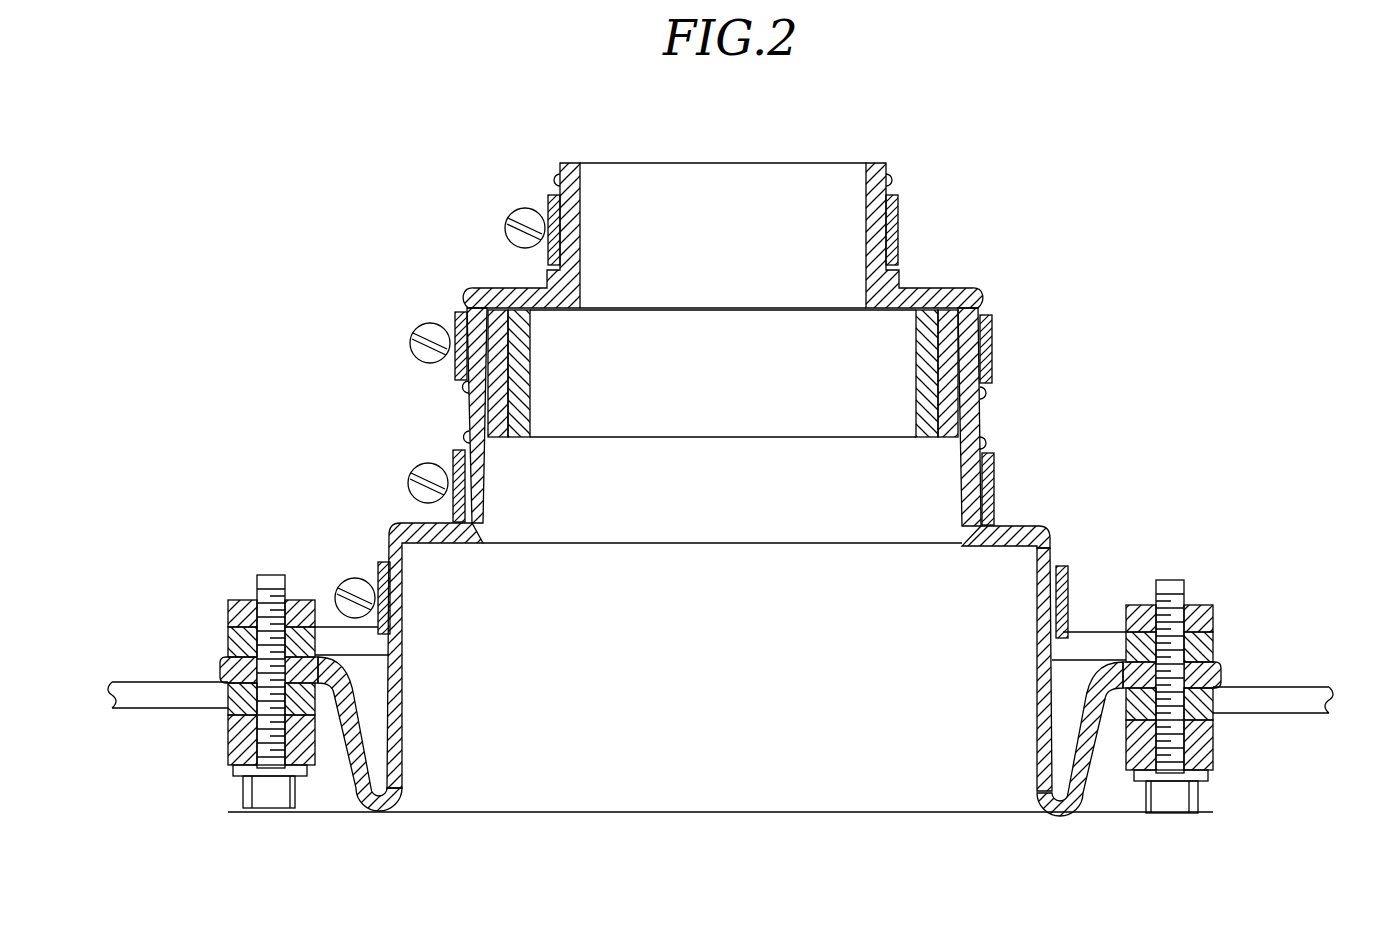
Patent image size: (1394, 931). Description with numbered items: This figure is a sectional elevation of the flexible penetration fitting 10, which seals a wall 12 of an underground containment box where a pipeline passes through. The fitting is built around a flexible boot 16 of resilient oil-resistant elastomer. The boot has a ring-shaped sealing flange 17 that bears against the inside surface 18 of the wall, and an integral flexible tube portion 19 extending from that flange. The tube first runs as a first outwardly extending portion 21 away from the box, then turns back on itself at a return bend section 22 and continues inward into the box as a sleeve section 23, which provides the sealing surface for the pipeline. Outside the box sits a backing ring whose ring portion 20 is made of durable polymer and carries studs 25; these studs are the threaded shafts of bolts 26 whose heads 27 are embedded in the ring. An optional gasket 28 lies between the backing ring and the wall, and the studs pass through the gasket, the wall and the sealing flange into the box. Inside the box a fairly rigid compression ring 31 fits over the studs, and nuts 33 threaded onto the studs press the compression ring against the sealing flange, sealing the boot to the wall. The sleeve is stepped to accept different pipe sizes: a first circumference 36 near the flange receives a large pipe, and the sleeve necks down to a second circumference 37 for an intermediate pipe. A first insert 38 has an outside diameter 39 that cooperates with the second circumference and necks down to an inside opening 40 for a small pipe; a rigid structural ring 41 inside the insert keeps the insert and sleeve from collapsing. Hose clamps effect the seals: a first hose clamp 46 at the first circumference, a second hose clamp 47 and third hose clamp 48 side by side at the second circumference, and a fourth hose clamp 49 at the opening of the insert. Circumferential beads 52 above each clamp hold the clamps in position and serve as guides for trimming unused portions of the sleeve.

The flexible penetration fitting 10 is at (1078, 508).
The wall 12 is at (1290, 692).
The flexible boot 16 is at (992, 528).
The sealing flange 17 is at (222, 668).
The inside surface 18 is at (1216, 667).
The flexible tube portion 19 is at (398, 530).
The ring portion 20 is at (232, 770).
The first outwardly extending portion 21 is at (1090, 795).
The return bend section 22 is at (374, 810).
The sleeve section 23 is at (1040, 775).
The studs 25 is at (262, 578).
The bolts 26 is at (236, 806).
The heads 27 is at (256, 812).
The gasket 28 is at (228, 722).
The compression ring 31 is at (228, 640).
The nuts 33 is at (228, 610).
The first circumference 36 is at (1068, 600).
The second circumference 37 is at (960, 400).
The first insert 38 is at (940, 292).
The outside diameter 39 is at (982, 300).
The inside opening 40 is at (850, 182).
The structural ring 41 is at (922, 432).
The first hose clamp 46 is at (376, 566).
The second hose clamp 47 is at (455, 430).
The third hose clamp 48 is at (440, 322).
The fourth hose clamp 49 is at (545, 203).
The circumferential beads 52 is at (455, 313).